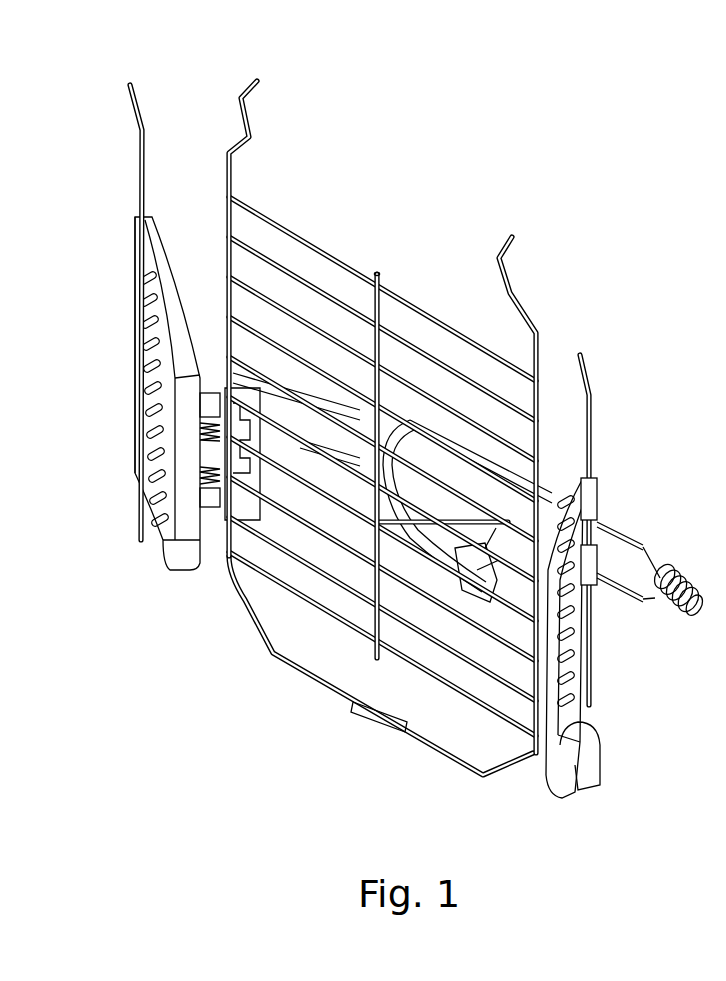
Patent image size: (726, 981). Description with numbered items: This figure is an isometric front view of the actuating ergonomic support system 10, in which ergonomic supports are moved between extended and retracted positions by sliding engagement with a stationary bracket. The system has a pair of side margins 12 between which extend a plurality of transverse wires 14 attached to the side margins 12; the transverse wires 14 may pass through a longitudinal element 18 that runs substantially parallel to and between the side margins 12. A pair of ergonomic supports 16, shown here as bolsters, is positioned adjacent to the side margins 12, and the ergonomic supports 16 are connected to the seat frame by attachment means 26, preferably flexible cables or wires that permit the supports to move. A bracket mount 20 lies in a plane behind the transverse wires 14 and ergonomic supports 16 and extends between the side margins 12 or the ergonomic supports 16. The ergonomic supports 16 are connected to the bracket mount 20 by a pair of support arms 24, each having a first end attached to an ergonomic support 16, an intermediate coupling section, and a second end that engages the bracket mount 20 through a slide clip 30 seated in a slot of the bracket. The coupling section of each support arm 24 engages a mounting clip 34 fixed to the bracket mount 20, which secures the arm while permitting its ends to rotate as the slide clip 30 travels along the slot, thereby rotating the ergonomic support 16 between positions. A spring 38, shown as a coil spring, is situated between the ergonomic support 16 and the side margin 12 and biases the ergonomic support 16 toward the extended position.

The actuating ergonomic support system 10 is at (440, 104).
The side margins 12 is at (252, 107).
The transverse wires 14 is at (308, 238).
The ergonomic supports 16 is at (156, 250).
The longitudinal element 18 is at (378, 262).
The bracket mount 20 is at (356, 528).
The support arms 24 is at (250, 525).
The attachment means 26 is at (143, 105).
The slide clip 30 is at (262, 545).
The mounting clip 34 is at (205, 502).
The spring 38 is at (205, 433).